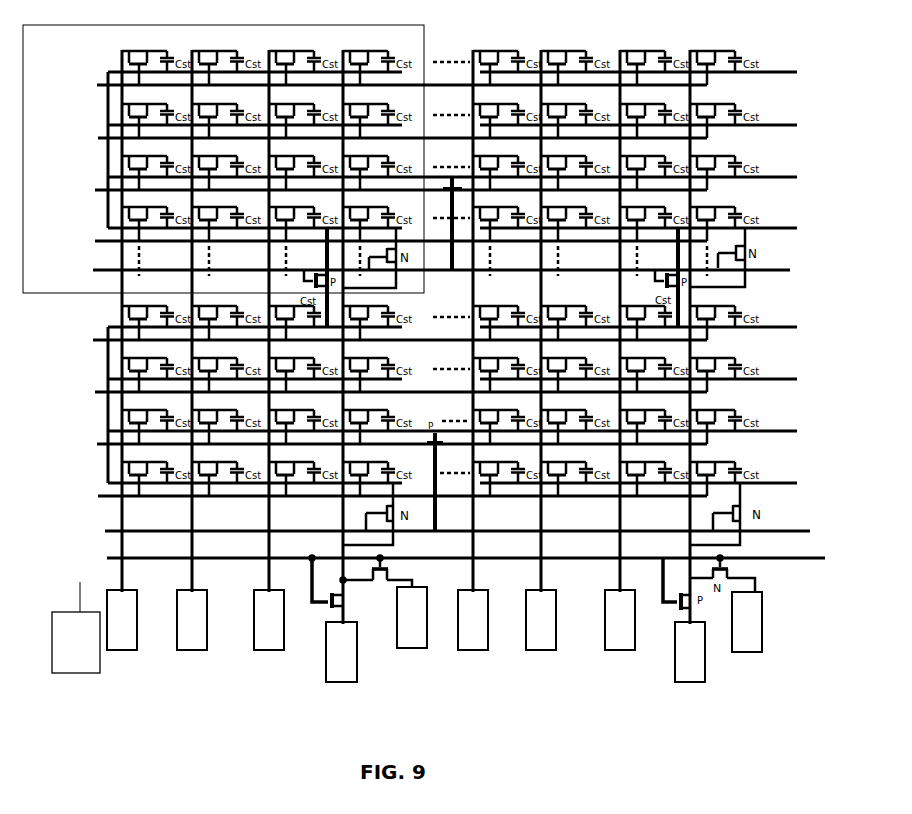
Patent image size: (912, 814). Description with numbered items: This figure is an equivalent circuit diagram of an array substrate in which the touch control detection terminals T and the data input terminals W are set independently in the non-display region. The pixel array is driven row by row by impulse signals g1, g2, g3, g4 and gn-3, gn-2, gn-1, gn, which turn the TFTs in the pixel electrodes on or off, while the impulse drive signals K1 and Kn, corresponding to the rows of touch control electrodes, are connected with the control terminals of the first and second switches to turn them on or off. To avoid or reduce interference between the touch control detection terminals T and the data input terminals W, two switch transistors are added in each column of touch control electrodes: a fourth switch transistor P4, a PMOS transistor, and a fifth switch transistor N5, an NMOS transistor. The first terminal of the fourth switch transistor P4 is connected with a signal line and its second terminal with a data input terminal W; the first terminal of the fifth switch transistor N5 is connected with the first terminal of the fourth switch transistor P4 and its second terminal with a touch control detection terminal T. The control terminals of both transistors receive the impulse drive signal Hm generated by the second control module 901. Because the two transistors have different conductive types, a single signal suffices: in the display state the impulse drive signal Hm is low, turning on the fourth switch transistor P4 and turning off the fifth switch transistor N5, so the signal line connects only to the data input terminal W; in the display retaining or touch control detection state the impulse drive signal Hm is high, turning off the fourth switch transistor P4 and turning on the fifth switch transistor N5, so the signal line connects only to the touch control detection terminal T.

The second control module 901 is at (63, 627).
The impulse signal gn is at (379, 90).
The impulse signal gn-1 is at (378, 139).
The impulse signal gn-2 is at (377, 191).
The impulse signal gn-3 is at (377, 240).
The impulse drive signal Kn is at (417, 271).
The impulse signal g4 is at (383, 341).
The impulse signal g3 is at (386, 391).
The impulse signal g2 is at (386, 444).
The impulse signal g1 is at (387, 493).
The impulse drive signal K1 is at (432, 533).
The impulse drive signal Hm is at (440, 568).
The fourth switch transistor P4 is at (333, 582).
The fifth switch transistor N5 is at (377, 577).
The data input terminal W is at (406, 636).
The touch control detection terminal T is at (579, 619).